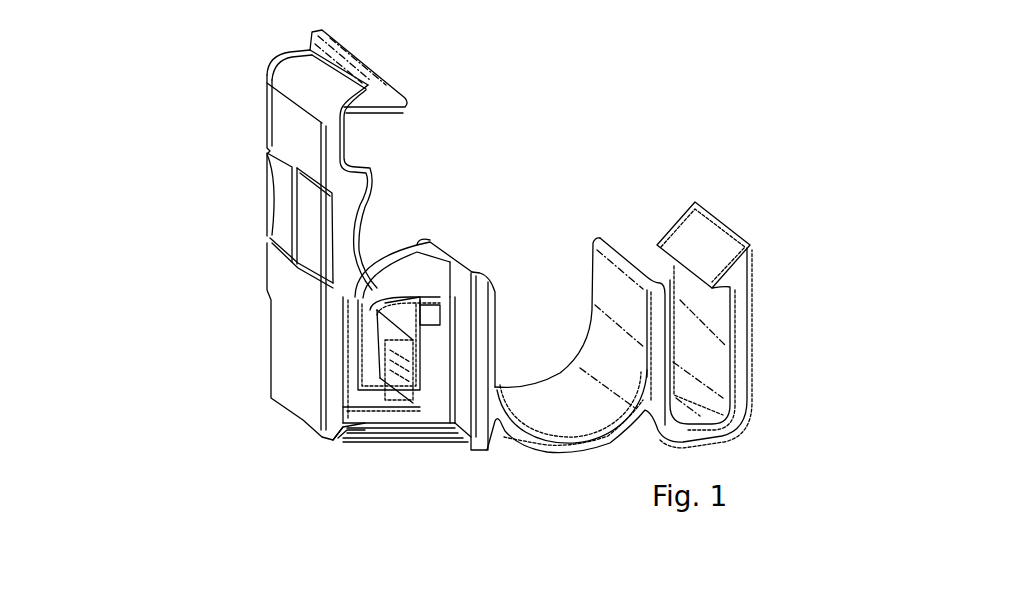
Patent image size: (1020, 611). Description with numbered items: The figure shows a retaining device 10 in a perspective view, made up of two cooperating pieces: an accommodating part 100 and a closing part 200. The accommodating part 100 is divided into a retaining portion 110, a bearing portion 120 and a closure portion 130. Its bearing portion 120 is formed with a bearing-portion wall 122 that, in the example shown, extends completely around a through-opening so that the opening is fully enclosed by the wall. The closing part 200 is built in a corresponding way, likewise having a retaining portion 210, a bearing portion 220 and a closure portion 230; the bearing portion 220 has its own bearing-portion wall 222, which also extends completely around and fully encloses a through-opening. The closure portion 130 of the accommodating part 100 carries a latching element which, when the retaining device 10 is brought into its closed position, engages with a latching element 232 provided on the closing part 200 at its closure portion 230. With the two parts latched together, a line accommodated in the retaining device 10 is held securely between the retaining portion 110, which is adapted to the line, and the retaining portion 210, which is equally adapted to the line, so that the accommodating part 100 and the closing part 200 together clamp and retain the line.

The retaining device 10 is at (557, 103).
The accommodating part 100 is at (747, 207).
The retaining portion 110 is at (557, 450).
The bearing portion 120 is at (410, 232).
The bearing-portion wall 122 is at (372, 343).
The closure portion 130 is at (755, 368).
The closing part 200 is at (221, 103).
The retaining portion 210 is at (315, 222).
The bearing portion 220 is at (357, 432).
The bearing-portion wall 222 is at (403, 407).
The closure portion 230 is at (343, 517).
The latching element 232 is at (384, 94).